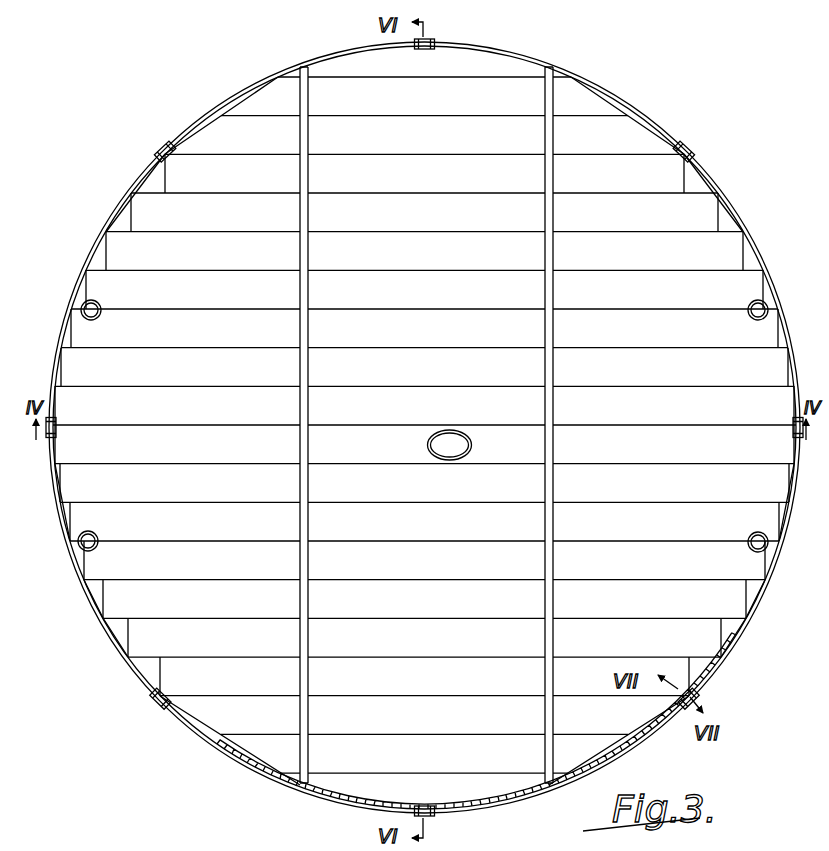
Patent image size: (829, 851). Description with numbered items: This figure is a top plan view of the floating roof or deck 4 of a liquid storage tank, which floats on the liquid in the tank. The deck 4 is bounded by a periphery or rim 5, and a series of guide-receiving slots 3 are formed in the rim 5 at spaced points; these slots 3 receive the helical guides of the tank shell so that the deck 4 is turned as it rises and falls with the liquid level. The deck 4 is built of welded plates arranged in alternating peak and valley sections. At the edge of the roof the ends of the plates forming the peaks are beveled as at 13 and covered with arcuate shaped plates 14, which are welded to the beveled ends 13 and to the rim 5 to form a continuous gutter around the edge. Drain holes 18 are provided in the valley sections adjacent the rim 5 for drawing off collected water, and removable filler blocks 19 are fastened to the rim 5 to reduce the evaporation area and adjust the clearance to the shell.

The guide-receiving slot 3 is at (431, 51).
The roof or deck 4 is at (633, 459).
The rim 5 is at (142, 672).
The beveled end 13 is at (60, 514).
The arcuate shaped plate 14 is at (208, 738).
The drain hole 18 is at (101, 306).
The filler block 19 is at (326, 800).